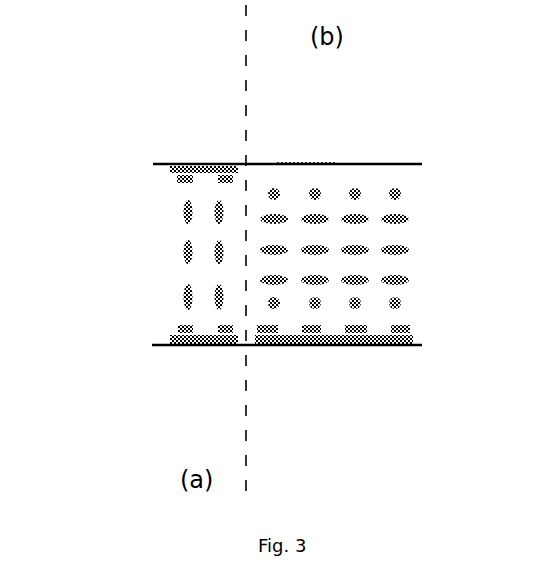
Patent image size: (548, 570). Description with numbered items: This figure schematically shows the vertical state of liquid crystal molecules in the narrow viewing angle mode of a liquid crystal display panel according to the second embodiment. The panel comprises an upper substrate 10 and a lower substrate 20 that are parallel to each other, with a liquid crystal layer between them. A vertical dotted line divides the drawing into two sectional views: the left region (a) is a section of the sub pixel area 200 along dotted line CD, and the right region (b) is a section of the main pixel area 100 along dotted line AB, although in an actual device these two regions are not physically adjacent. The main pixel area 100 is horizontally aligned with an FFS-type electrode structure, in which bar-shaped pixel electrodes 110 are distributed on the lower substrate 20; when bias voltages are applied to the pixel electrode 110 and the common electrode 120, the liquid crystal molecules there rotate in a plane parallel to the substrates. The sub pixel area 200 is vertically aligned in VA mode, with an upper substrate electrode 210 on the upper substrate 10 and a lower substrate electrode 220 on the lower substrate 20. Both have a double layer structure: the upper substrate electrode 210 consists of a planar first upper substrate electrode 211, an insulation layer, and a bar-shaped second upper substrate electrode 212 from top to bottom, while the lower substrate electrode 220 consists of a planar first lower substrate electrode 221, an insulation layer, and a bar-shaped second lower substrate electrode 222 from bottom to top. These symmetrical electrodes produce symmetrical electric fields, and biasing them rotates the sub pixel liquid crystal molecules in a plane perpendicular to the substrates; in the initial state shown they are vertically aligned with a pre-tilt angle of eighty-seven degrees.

The upper substrate 10 is at (443, 165).
The lower substrate 20 is at (440, 345).
The main pixel area 100 is at (334, 163).
The pixel electrode 110 is at (313, 353).
The common electrode 120 is at (363, 350).
The sub pixel area 200 is at (135, 292).
The upper substrate electrode 210 is at (135, 173).
The first upper substrate electrode 211 is at (177, 169).
The second upper substrate electrode 212 is at (177, 182).
The lower substrate electrode 220 is at (137, 331).
The first lower substrate electrode 221 is at (170, 343).
The second lower substrate electrode 222 is at (178, 325).